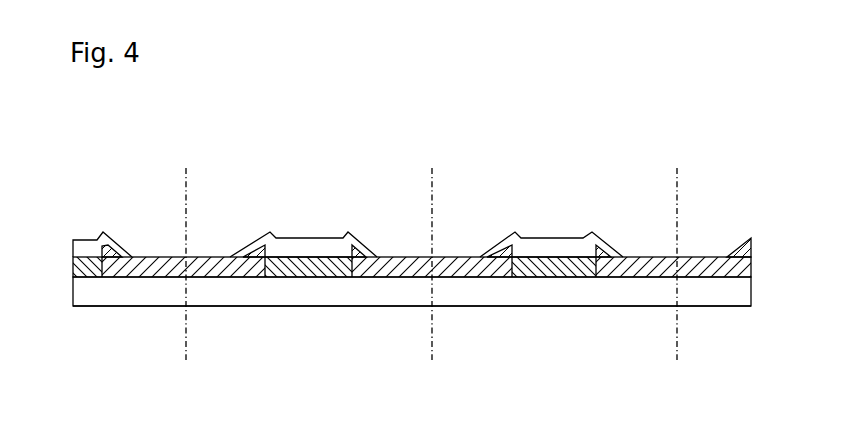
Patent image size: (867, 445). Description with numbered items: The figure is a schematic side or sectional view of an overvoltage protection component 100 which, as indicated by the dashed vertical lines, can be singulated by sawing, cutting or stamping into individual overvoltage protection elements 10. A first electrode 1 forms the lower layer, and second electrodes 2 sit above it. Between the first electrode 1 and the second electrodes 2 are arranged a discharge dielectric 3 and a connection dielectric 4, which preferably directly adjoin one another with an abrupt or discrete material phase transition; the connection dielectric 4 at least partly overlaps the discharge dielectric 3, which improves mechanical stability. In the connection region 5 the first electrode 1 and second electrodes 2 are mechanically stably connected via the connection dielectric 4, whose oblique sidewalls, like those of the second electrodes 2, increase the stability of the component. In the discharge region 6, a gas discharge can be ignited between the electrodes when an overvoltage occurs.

The overvoltage protection component 100 is at (106, 176).
The first electrode 1 is at (621, 297).
The second electrode 2 is at (562, 247).
The discharge dielectric 3 is at (530, 265).
The connection dielectric 4 is at (697, 265).
The connection region 5 is at (378, 295).
The discharge region 6 is at (430, 229).
The overvoltage protection element 10 is at (295, 321).